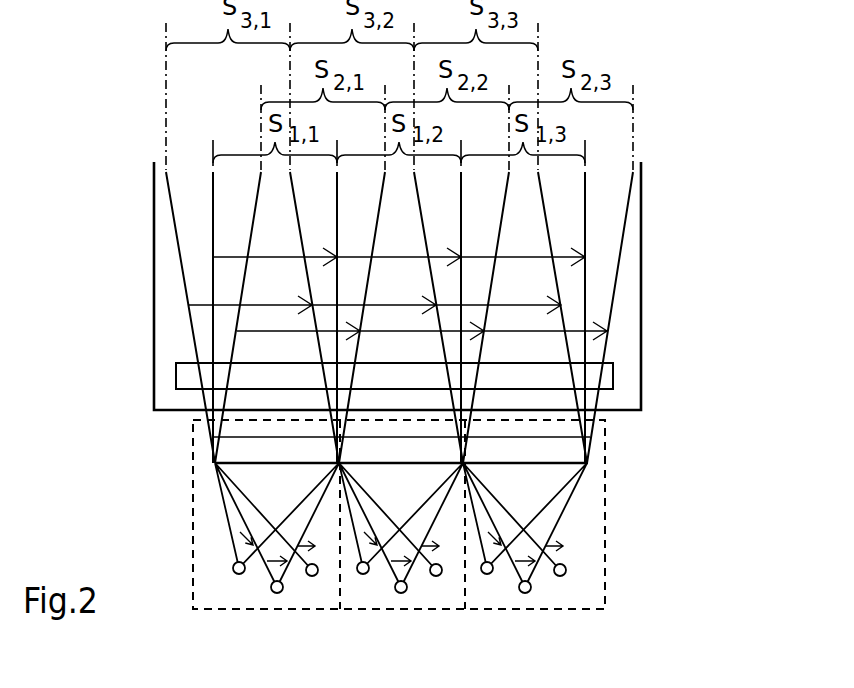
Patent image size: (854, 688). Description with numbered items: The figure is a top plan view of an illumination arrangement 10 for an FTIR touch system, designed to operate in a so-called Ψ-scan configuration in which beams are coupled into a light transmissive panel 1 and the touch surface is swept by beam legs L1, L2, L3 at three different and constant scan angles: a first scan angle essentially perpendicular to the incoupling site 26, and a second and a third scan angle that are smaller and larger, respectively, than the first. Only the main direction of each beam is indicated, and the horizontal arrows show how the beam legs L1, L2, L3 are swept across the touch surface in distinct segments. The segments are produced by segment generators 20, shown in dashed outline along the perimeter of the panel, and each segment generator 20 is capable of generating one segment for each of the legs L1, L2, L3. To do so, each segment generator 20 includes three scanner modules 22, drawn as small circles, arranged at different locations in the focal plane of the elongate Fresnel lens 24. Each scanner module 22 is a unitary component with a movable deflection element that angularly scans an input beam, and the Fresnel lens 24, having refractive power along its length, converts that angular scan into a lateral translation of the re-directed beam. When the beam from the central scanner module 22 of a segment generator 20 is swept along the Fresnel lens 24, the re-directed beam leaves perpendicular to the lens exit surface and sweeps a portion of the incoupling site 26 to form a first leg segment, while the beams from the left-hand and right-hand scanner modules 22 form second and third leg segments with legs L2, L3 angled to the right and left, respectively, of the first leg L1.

The light transmissive panel 1 is at (648, 238).
The illumination arrangement 10 is at (102, 500).
The segment generator 20 is at (191, 538).
The scanner module 22 is at (272, 590).
The Fresnel lens 24 is at (232, 450).
The incoupling site 26 is at (610, 376).
The first beam leg L1 is at (214, 243).
The second beam leg L2 is at (254, 212).
The third beam leg L3 is at (175, 222).